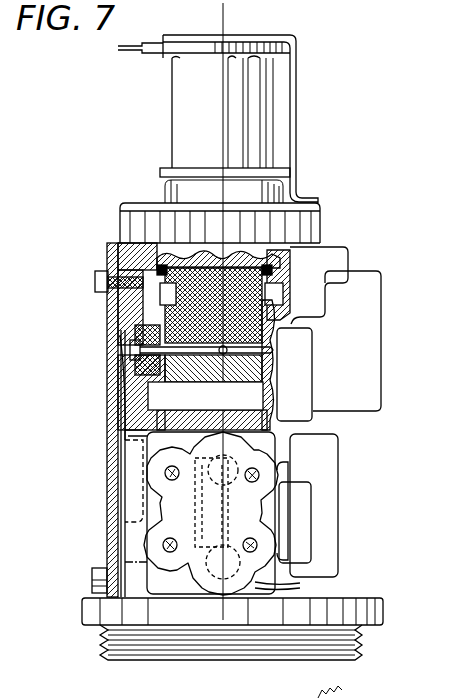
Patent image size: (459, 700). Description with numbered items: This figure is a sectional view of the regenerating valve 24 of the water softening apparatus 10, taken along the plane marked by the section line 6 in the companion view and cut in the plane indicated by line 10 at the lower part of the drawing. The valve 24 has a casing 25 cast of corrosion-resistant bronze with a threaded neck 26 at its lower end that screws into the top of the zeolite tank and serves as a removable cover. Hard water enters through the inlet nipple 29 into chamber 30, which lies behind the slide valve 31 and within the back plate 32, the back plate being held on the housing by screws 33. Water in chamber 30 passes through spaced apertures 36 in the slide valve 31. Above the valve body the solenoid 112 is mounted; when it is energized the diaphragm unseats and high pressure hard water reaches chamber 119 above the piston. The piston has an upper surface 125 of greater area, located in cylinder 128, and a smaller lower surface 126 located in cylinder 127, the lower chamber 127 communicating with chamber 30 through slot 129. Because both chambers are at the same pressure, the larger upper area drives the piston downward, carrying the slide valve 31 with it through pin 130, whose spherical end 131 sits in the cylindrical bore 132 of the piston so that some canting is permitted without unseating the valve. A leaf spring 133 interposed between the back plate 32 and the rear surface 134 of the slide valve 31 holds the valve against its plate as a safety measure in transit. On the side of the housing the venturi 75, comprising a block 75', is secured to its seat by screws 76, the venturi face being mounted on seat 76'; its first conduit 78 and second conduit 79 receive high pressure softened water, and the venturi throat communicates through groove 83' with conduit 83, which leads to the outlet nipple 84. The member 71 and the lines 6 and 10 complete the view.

The section line 6- 6 is at (213, 18).
The water softening apparatus 10 is at (322, 431).
The regenerating valve 24 is at (294, 90).
The casing 25 is at (353, 254).
The threaded neck 26 is at (364, 638).
The inlet nipple 29 is at (384, 286).
The chamber 30 is at (128, 318).
The slide valve 31 is at (126, 375).
The back plate 32 is at (108, 462).
The screws 33 is at (95, 282).
The apertures 36 is at (140, 433).
The spring plate 71 is at (339, 472).
The venturi 75 is at (232, 513).
The block 75' is at (291, 511).
The screws 76 is at (206, 517).
The seat 76' is at (318, 581).
The first conduit 78 is at (250, 470).
The second conduit 79 is at (237, 564).
The conduit 83 is at (176, 534).
The groove 83' is at (186, 462).
The nipple 84 is at (305, 537).
The solenoid 112 is at (186, 128).
The chamber 119 is at (208, 250).
The upper surface 125 is at (247, 265).
The lower surface 126 is at (265, 390).
The cylinder 127 is at (258, 402).
The cylinder 128 is at (282, 300).
The slot 129 is at (172, 396).
The pin 130 is at (128, 352).
The spherical end 131 is at (274, 352).
The cylindrical bore 132 is at (268, 357).
The leaf spring 133 is at (113, 398).
The rear surface 134 is at (108, 510).